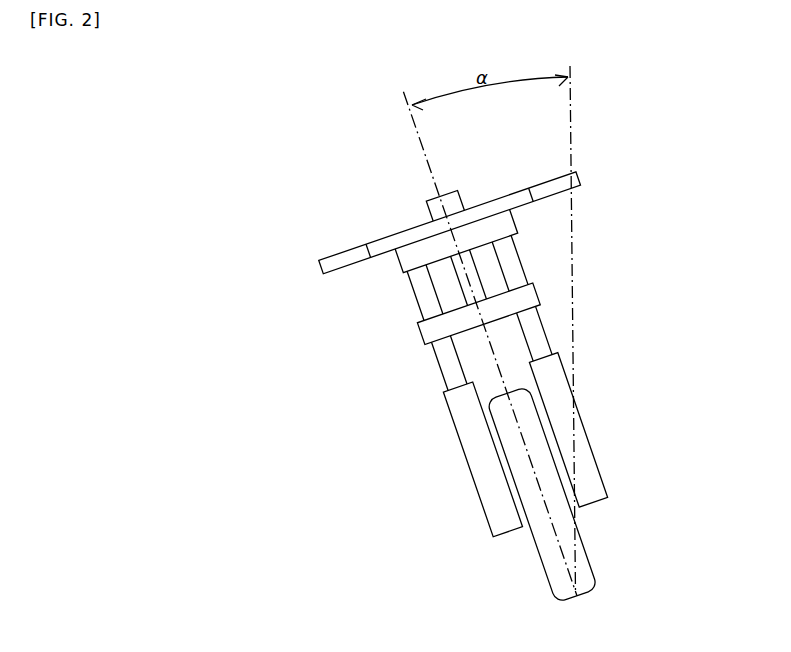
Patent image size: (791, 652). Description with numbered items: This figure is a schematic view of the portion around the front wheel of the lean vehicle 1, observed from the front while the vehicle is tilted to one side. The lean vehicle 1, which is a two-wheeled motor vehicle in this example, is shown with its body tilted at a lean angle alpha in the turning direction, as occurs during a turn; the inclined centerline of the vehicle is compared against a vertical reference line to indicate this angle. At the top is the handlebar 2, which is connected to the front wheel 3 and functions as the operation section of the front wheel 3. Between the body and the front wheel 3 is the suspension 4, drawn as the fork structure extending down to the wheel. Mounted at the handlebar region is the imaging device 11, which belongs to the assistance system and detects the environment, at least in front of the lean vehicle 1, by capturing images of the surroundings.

The lean vehicle 1 is at (309, 146).
The handlebar 2 is at (346, 251).
The front wheel 3 is at (582, 574).
The suspension 4 is at (577, 447).
The imaging device 11 is at (431, 203).